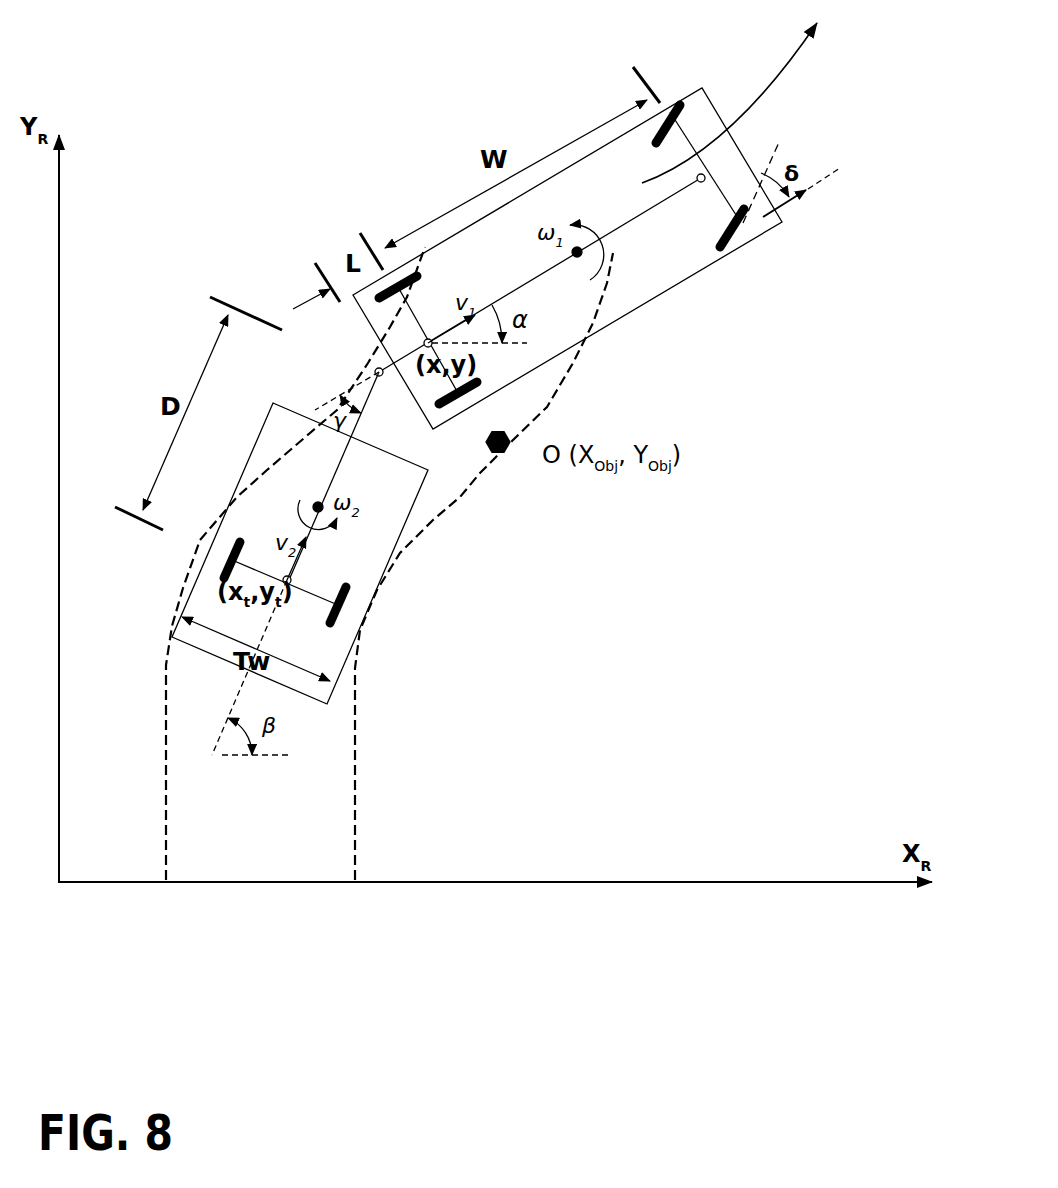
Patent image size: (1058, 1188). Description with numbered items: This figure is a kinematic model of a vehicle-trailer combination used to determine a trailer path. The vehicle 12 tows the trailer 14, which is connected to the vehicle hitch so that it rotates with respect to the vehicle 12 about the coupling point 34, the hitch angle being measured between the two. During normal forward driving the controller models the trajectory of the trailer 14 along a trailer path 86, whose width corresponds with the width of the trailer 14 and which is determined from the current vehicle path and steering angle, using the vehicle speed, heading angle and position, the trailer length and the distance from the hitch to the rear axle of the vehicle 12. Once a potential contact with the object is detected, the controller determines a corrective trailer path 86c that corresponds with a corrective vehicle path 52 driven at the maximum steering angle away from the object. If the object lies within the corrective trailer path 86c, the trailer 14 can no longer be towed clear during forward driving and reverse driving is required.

The vehicle 12 is at (683, 283).
The trailer 14 is at (417, 500).
The coupling point 34 is at (377, 370).
The corrective vehicle path 52 is at (783, 85).
The trailer path 86 is at (418, 566).
The corrective trailer path 86c is at (474, 527).